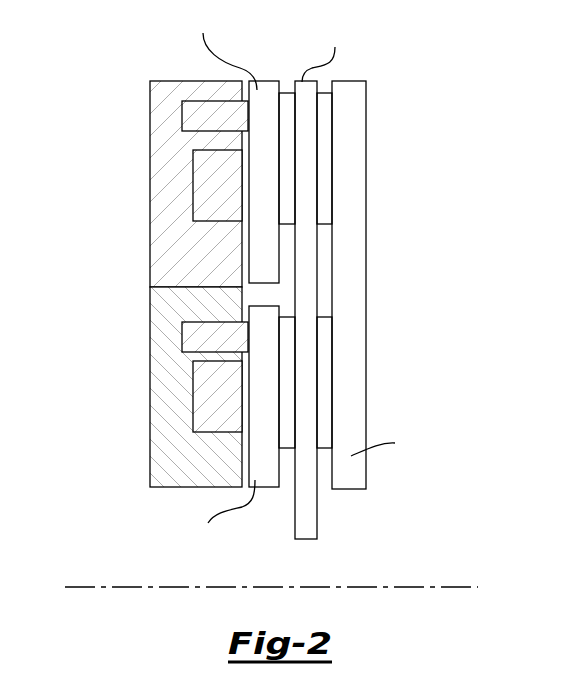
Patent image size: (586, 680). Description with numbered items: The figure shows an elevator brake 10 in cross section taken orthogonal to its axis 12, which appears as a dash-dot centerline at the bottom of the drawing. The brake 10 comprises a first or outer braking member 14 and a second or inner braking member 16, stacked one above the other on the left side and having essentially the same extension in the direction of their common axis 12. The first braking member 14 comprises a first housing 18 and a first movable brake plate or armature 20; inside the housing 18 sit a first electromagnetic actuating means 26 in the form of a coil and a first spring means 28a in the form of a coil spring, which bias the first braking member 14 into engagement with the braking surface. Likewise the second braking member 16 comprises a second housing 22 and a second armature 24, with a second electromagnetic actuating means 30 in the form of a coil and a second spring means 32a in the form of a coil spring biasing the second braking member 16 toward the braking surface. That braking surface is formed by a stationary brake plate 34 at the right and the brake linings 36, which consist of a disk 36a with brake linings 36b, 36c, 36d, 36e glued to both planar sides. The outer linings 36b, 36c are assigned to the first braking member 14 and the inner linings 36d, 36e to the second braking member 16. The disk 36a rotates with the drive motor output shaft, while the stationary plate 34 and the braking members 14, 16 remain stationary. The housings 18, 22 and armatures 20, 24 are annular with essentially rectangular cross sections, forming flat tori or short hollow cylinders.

The elevator brake 10 is at (361, 36).
The axis 12 is at (427, 585).
The first braking member 14 is at (163, 161).
The second braking member 16 is at (150, 419).
The first housing 18 is at (162, 153).
The first armature 20 is at (265, 92).
The second housing 22 is at (162, 455).
The second armature 24 is at (264, 475).
The first electromagnetic actuating means 26 is at (197, 188).
The first spring means 28a is at (192, 117).
The second electromagnetic actuating means 30 is at (197, 410).
The second spring means 32a is at (192, 337).
The stationary brake plate 34 is at (352, 475).
The brake linings 36 is at (307, 92).
The disk 36a is at (303, 118).
The first brake lining 36b is at (322, 157).
The first brake lining 36c is at (285, 202).
The second brake lining 36d is at (323, 361).
The second brake lining 36e is at (285, 406).